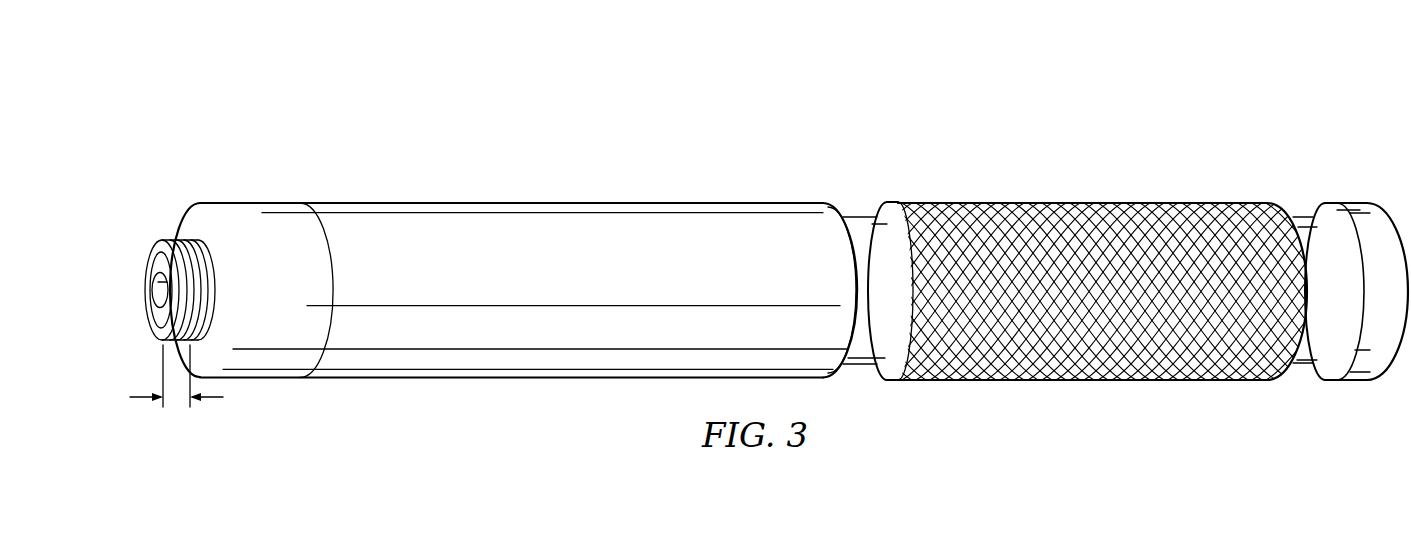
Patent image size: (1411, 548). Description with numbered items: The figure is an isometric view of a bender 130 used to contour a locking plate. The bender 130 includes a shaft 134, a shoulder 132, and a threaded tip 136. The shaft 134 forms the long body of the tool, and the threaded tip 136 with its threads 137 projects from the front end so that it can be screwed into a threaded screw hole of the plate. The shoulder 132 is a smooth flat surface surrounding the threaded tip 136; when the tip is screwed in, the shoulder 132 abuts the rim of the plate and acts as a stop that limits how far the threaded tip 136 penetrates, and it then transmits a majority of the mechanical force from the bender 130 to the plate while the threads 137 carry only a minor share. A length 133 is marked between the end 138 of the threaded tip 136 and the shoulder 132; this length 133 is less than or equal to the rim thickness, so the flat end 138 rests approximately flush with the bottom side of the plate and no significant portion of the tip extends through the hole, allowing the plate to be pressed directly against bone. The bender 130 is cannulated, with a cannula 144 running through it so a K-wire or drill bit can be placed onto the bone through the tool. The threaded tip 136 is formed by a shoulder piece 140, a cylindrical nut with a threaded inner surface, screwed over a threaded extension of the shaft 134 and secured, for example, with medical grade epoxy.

The bender 130 is at (531, 109).
The shoulder 132 is at (197, 223).
The length 133 is at (178, 403).
The shaft 134 is at (753, 202).
The threaded tip 136 is at (187, 240).
The threads 137 is at (193, 288).
The end 138 is at (145, 277).
The shoulder piece 140 is at (260, 203).
The cannula 144 is at (157, 292).